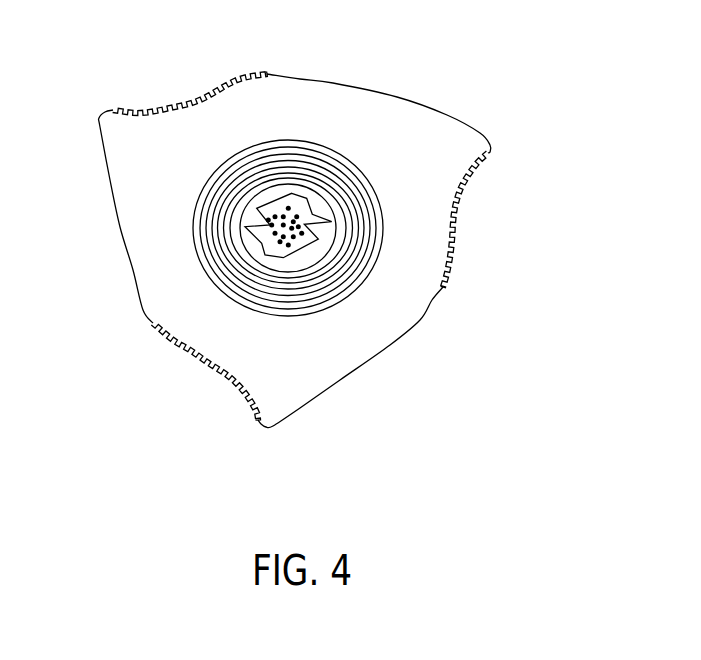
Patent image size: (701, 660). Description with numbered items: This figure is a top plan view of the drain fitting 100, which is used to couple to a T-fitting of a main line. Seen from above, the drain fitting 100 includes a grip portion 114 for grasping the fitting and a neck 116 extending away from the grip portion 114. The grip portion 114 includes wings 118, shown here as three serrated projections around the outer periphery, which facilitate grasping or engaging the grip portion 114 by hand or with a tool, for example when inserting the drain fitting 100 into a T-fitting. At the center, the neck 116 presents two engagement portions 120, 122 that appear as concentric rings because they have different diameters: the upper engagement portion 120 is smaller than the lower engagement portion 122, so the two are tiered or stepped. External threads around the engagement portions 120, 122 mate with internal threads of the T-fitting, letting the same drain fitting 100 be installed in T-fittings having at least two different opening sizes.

The drain fitting 100 is at (555, 110).
The grip portion 114 is at (418, 338).
The neck 116 is at (250, 125).
The wings 118 is at (98, 120).
The upper engagement portion 120 is at (208, 234).
The lower engagement portion 122 is at (340, 157).